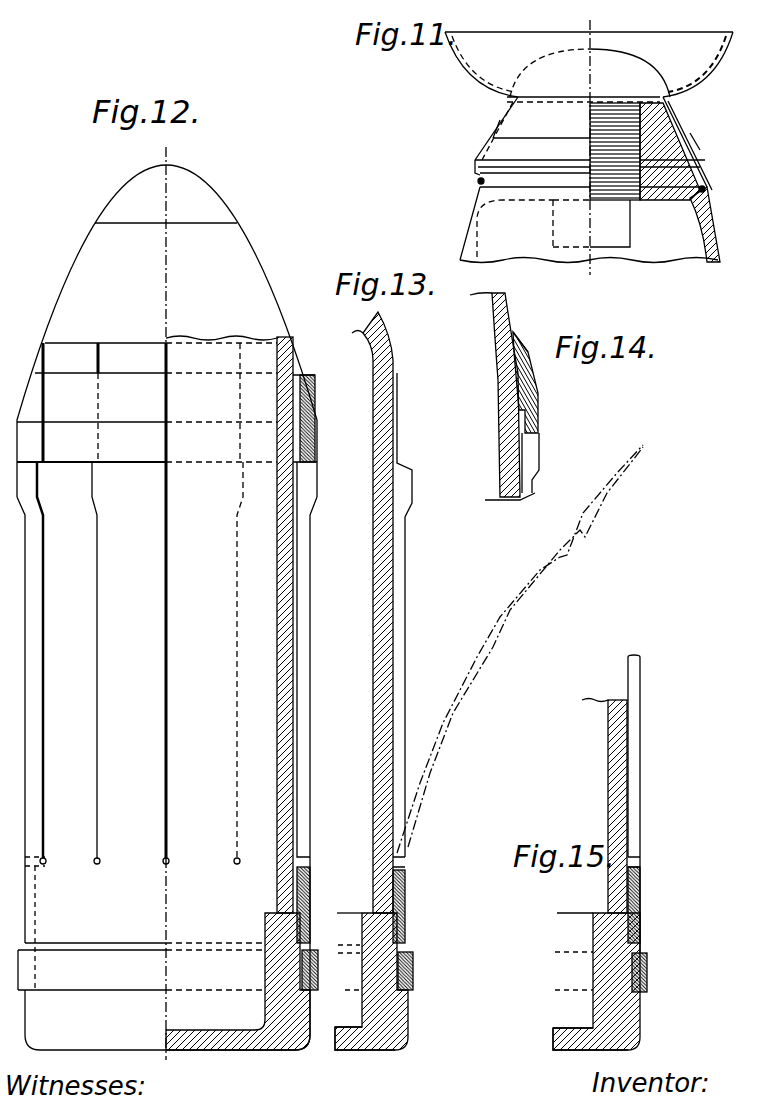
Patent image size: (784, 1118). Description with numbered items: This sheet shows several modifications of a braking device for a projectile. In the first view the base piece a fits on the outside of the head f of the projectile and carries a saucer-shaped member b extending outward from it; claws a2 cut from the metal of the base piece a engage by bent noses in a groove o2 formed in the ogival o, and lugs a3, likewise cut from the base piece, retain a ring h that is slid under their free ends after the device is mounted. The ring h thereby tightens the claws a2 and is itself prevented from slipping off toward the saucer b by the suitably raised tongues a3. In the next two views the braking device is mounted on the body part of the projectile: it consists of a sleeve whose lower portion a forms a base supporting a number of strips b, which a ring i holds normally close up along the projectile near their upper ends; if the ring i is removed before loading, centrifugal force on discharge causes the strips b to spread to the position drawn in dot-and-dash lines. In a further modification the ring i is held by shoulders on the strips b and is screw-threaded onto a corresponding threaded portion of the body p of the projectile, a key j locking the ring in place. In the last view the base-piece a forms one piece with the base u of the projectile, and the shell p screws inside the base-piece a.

In FIG. 11, the head f is at (627, 75).
In FIG. 11, the saucer / strips b is at (589, 111).
In FIG. 12, the saucer / strips b is at (318, 589).
In FIG. 13, the saucer / strips b is at (400, 557).
In FIG. 14, the saucer / strips b is at (532, 462).
In FIG. 15, the saucer / strips b is at (524, 622).
In FIG. 11, the claws a2 is at (702, 191).
In FIG. 11, the lugs a3 is at (690, 133).
In FIG. 11, the ring h is at (705, 160).
In FIG. 11, the ogival o is at (710, 219).
In FIG. 11, the groove o2 is at (680, 202).
In FIG. 12, the ring i is at (310, 447).
In FIG. 14, the ring i is at (533, 405).
In FIG. 14, the key j is at (525, 332).
In FIG. 12, the body / shell of the projectile p is at (290, 712).
In FIG. 13, the body / shell of the projectile p is at (385, 620).
In FIG. 14, the body / shell of the projectile p is at (498, 440).
In FIG. 15, the body / shell of the projectile p is at (610, 782).
In FIG. 12, the base piece a is at (310, 900).
In FIG. 13, the base piece a is at (408, 893).
In FIG. 15, the base piece a is at (628, 892).
In FIG. 13, the base of the projectile u is at (387, 1028).
In FIG. 15, the base of the projectile u is at (615, 1018).